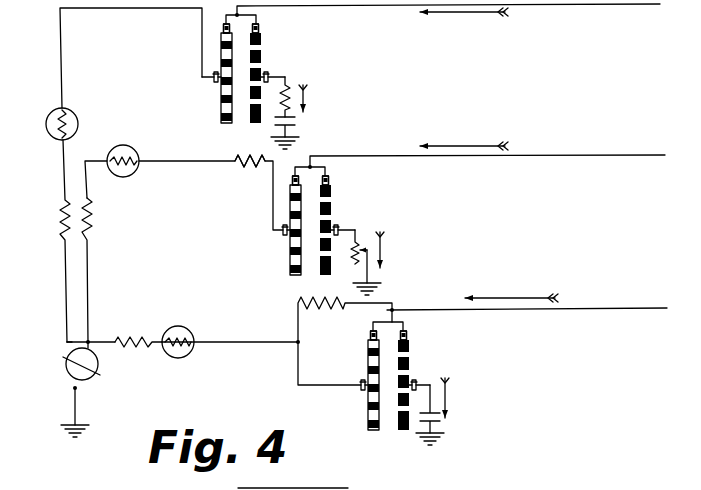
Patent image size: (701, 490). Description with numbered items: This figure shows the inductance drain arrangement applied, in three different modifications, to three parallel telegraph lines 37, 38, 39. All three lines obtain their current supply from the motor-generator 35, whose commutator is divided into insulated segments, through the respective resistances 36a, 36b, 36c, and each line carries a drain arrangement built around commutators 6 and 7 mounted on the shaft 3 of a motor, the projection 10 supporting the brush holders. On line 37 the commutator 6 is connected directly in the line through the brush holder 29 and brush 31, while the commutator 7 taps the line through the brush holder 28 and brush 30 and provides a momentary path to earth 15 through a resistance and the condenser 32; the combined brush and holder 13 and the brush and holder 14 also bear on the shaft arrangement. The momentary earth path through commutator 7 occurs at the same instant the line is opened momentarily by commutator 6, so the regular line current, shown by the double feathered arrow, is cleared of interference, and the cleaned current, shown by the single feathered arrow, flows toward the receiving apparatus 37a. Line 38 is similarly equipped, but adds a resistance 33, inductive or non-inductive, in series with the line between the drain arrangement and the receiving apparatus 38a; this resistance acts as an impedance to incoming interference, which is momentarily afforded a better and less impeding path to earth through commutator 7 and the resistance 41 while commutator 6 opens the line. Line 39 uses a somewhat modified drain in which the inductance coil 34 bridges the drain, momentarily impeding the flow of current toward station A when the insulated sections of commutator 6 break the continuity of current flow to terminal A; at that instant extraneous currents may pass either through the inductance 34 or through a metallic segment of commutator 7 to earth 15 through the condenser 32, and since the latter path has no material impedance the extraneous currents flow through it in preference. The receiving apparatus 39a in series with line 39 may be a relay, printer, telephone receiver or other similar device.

The shaft 3 is at (213, 77).
The commutator 6 is at (221, 96).
The commutator 7 is at (262, 40).
The projection 10 is at (290, 92).
The combined brush and holder 13 is at (267, 75).
The brush and holder 14 is at (214, 81).
The earth 15 is at (85, 428).
The brush holder 28 is at (259, 28).
The brush holder 29 is at (222, 30).
The brush 30 is at (257, 24).
The brush 31 is at (222, 26).
The condenser 32 is at (296, 123).
The resistance 33 is at (233, 168).
The inductance coil 34 is at (316, 307).
The motor-generator 35 is at (68, 373).
The resistance 36a is at (62, 216).
The resistance 36b is at (91, 224).
The resistance 36c is at (122, 340).
The line 37 is at (122, 13).
The receiving apparatus 37a is at (72, 114).
The line 38 is at (219, 145).
The receiving apparatus 38a is at (132, 150).
The line 39 is at (272, 326).
The receiving apparatus 39a is at (182, 328).
The resistance 41 is at (361, 247).
The station A is at (53, 332).